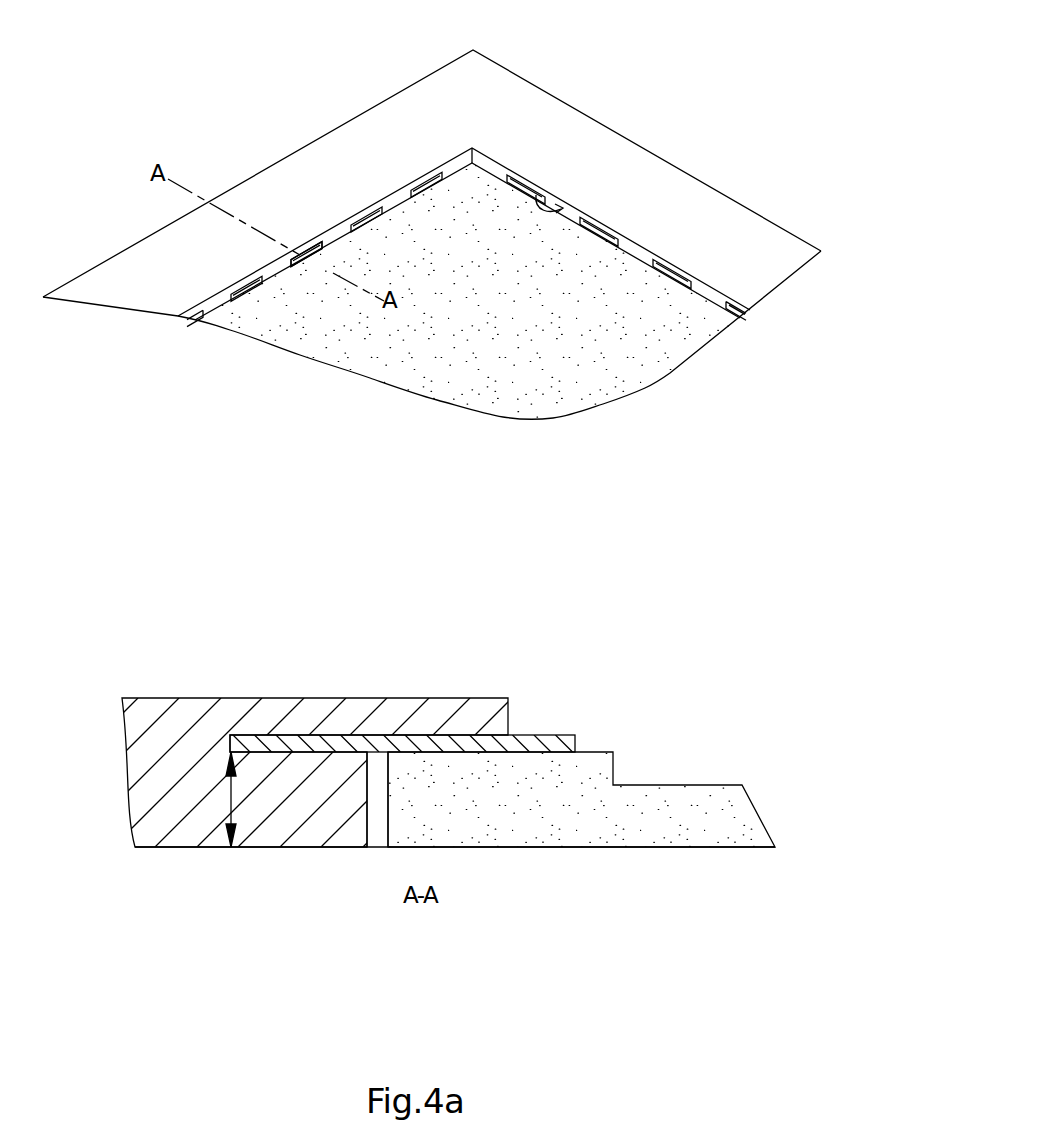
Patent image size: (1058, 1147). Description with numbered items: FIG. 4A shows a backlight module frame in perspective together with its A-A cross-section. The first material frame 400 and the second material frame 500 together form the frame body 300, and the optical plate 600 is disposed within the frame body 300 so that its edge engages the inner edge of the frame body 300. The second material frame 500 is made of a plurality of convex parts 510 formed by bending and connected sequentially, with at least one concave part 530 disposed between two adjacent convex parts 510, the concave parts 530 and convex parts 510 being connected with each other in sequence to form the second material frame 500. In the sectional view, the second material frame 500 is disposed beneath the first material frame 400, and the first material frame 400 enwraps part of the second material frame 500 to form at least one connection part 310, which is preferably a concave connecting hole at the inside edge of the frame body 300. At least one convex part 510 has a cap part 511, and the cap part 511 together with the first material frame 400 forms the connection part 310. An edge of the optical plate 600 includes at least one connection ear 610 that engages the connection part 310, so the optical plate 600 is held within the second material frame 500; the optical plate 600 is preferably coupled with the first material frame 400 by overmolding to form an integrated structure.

The frame body 300 is at (723, 53).
The first material frame 400 is at (517, 101).
The second material frame 500 is at (696, 107).
The convex part 510 is at (244, 280).
The cap part 511 is at (228, 802).
The concave part 530 is at (536, 195).
The optical plate 600 is at (441, 201).
The connection ear 610 is at (315, 247).
The connection part 310 is at (300, 259).